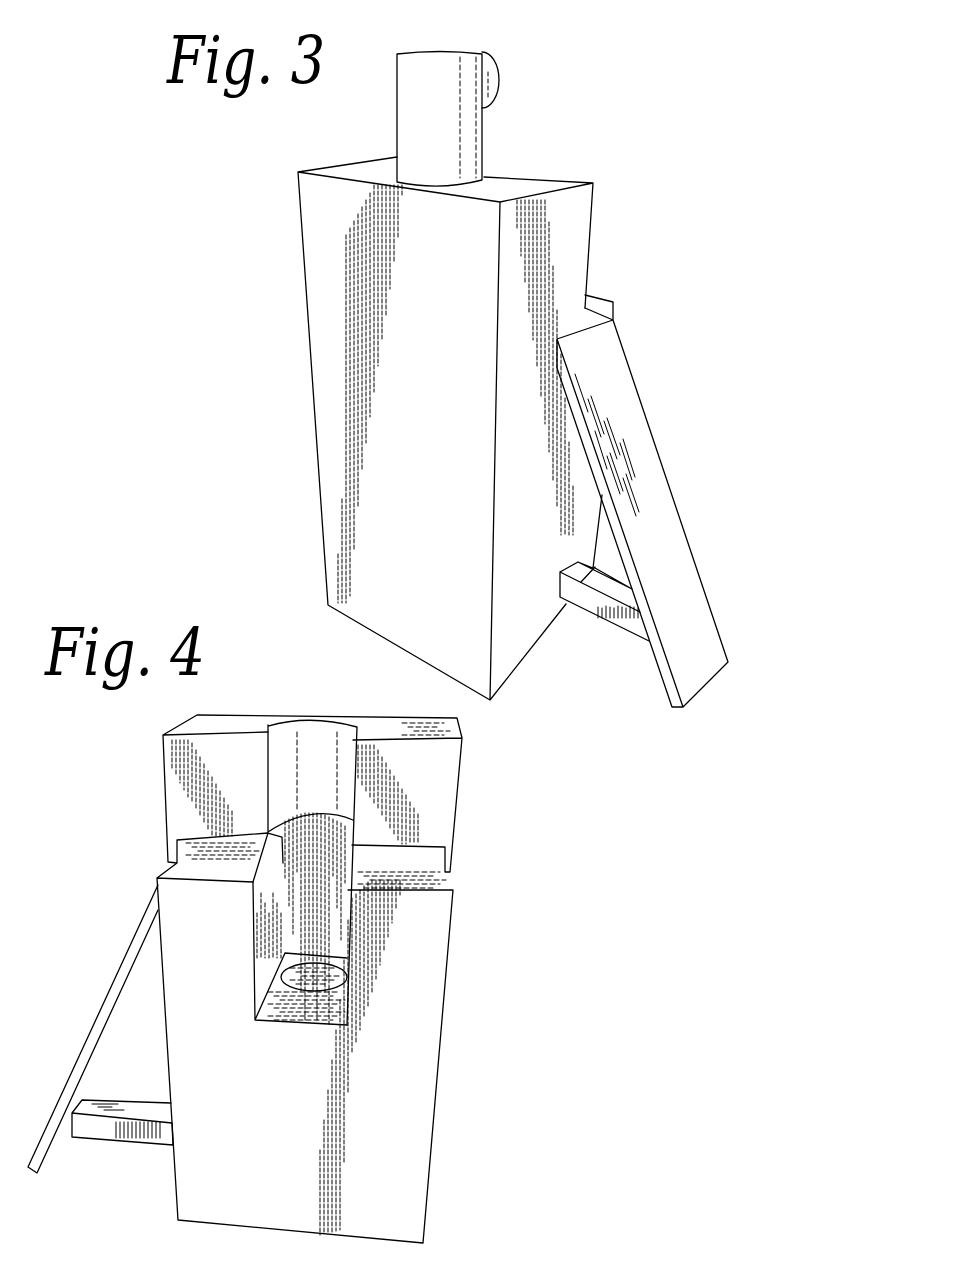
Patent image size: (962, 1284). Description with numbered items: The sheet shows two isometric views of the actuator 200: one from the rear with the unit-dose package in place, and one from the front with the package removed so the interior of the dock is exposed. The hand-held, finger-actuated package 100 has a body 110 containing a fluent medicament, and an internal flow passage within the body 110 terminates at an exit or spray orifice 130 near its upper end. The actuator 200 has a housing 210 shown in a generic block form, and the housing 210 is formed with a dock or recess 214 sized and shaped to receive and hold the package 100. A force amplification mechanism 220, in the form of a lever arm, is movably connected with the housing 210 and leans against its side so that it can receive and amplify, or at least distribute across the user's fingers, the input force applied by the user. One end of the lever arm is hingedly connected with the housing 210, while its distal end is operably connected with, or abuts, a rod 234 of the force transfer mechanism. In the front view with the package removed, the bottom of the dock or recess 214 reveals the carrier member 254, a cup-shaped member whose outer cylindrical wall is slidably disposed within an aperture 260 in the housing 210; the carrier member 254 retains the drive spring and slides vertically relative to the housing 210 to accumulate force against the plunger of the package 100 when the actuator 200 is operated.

In FIG. 3, the package 100 is at (508, 97).
In FIG. 3, the body 110 is at (446, 131).
In FIG. 3, the spray orifice 130 is at (487, 81).
In FIG. 3, the actuator 200 is at (512, 432).
In FIG. 3, the housing 210 is at (433, 392).
In FIG. 4, the housing 210 is at (250, 780).
In FIG. 4, the dock or recess 214 is at (340, 844).
In FIG. 3, the force amplification mechanism 220 is at (636, 462).
In FIG. 4, the force amplification mechanism 220 is at (95, 1047).
In FIG. 3, the rod 234 is at (610, 585).
In FIG. 4, the rod 234 is at (115, 1120).
In FIG. 4, the carrier member 254 is at (325, 980).
In FIG. 4, the aperture 260 is at (297, 962).